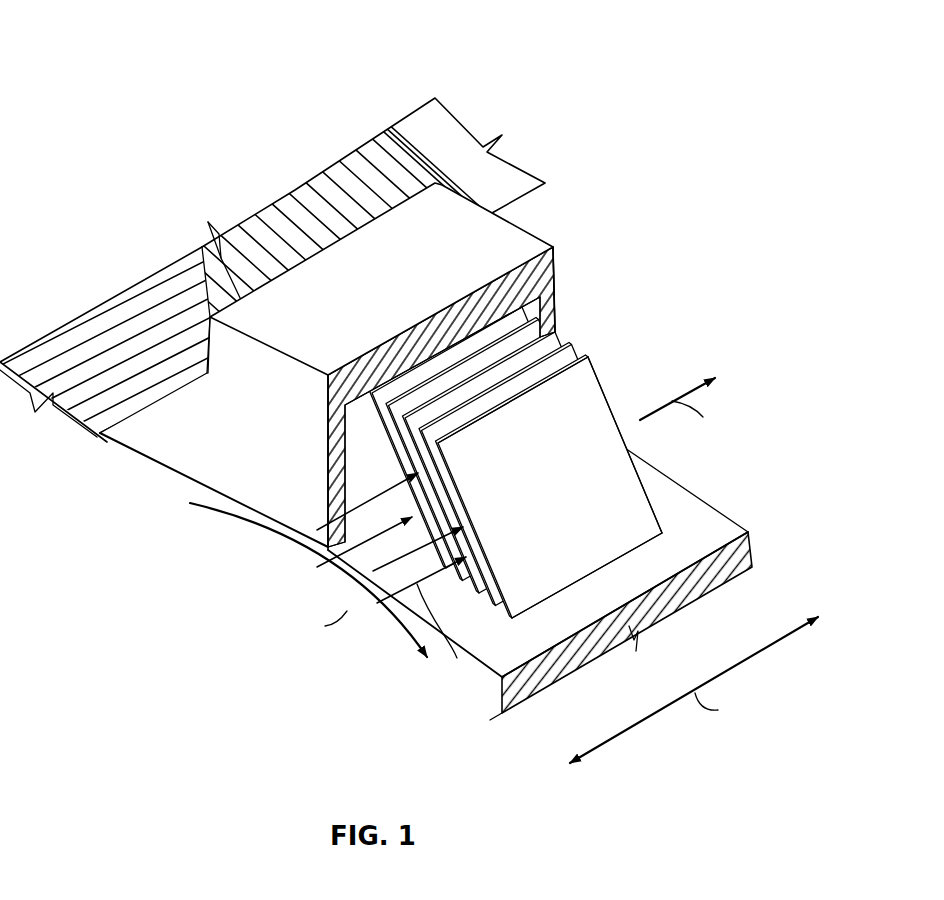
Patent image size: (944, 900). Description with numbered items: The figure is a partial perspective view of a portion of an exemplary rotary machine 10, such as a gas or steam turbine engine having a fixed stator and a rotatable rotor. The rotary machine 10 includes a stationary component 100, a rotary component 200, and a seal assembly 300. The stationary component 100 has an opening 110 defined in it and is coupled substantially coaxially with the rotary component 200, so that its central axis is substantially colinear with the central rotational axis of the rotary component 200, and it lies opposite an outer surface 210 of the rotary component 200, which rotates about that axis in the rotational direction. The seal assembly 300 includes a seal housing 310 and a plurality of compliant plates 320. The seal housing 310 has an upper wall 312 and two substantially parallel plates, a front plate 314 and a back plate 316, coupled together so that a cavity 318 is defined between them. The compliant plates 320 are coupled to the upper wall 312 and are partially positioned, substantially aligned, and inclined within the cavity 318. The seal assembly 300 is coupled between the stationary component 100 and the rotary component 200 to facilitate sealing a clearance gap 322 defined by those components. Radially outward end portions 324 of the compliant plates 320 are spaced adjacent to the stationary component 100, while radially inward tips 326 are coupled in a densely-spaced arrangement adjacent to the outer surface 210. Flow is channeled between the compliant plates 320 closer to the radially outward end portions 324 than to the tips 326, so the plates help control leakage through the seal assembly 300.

The rotary machine 10 is at (104, 70).
The stationary component 100 is at (118, 412).
The opening 110 is at (323, 247).
The rotary component 200 is at (743, 560).
The outer surface 210 is at (534, 651).
The seal assembly 300 is at (633, 332).
The seal housing 310 is at (182, 263).
The upper wall 312 is at (400, 306).
The front plate 314 is at (284, 406).
The back plate 316 is at (556, 266).
The cavity 318 is at (554, 284).
The compliant plates 320 is at (574, 501).
The clearance gap 322 is at (658, 542).
The radially outward end portions 324 is at (590, 367).
The radially inward tips 326 is at (646, 536).